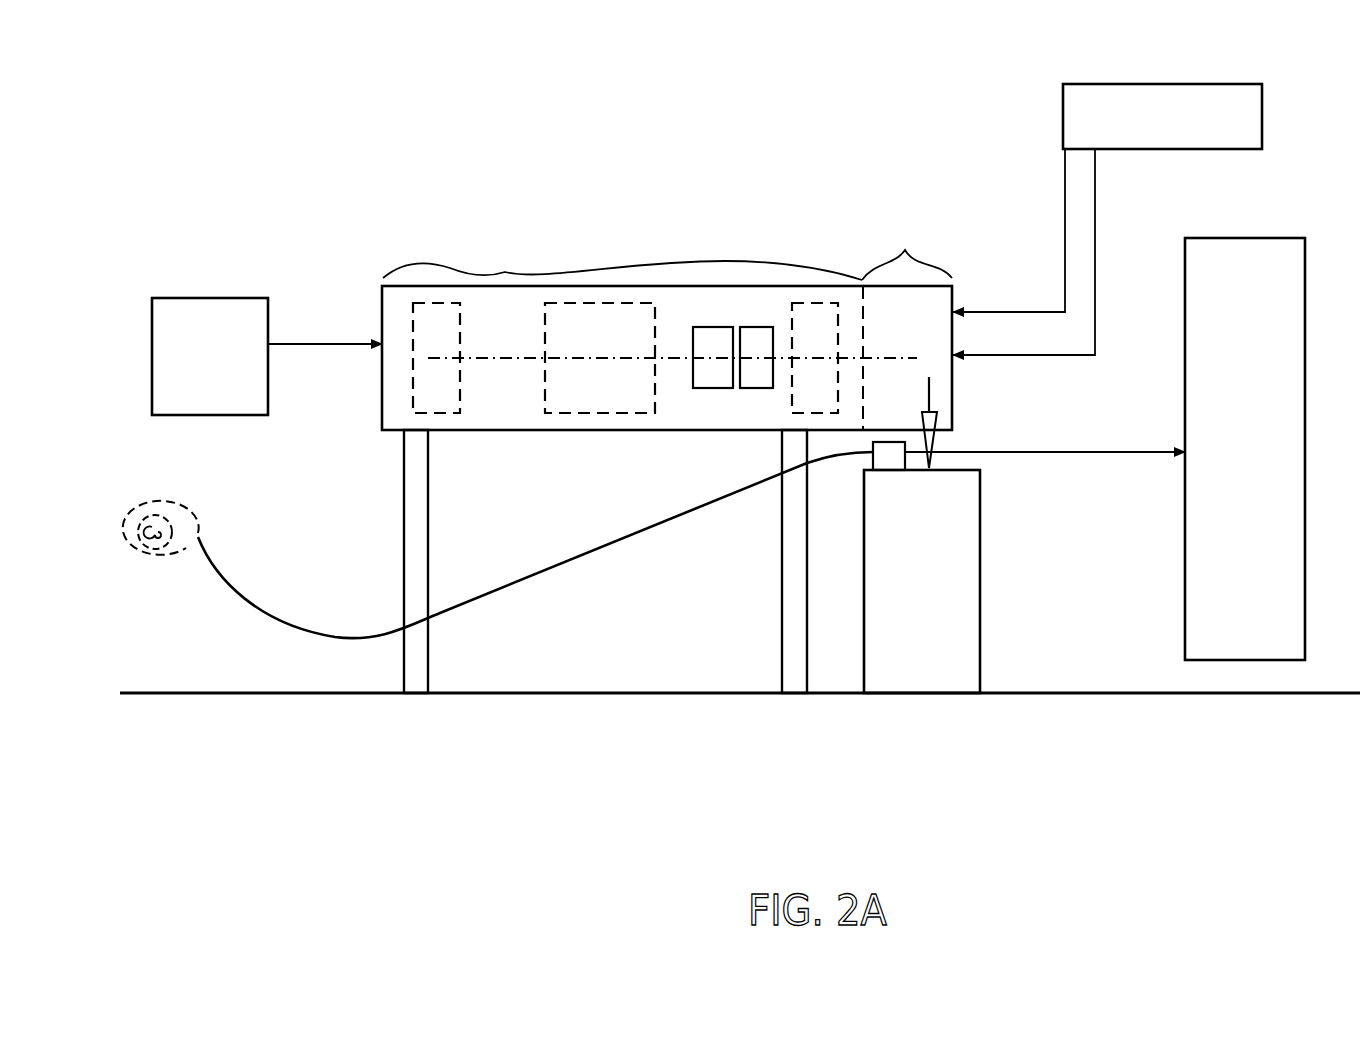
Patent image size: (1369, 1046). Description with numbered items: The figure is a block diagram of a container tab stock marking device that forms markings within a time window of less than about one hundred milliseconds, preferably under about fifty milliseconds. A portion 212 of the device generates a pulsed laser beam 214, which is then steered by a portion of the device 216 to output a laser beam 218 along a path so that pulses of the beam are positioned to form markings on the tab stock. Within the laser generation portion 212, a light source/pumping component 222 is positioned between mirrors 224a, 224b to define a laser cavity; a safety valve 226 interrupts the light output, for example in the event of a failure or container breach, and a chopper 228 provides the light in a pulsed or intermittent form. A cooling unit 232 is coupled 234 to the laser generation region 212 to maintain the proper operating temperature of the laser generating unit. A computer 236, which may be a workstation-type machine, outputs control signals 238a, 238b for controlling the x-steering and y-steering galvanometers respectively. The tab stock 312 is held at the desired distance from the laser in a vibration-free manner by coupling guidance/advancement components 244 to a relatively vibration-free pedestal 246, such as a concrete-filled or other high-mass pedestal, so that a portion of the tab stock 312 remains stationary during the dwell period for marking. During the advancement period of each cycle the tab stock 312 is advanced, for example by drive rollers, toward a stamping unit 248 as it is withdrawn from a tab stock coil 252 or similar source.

The laser generation portion 212 is at (505, 272).
The pulsed laser beam 214 is at (668, 353).
The beam steering portion 216 is at (905, 250).
The output laser beam 218 is at (937, 438).
The light source/pumping component 222 is at (609, 312).
The first mirror 224a is at (434, 312).
The second mirror 224b is at (814, 312).
The safety valve 226 is at (700, 332).
The chopper 228 is at (758, 372).
The cooling unit 232 is at (228, 373).
The coupling 234 is at (325, 301).
The computer 236 is at (1162, 100).
The first control signal 238a is at (1063, 172).
The second control signal 238b is at (1095, 183).
The guidance/advancement components 244 is at (890, 462).
The pedestal 246 is at (928, 597).
The stamping unit 248 is at (1240, 238).
The tab stock coil 252 is at (145, 552).
The tab stock 312 is at (650, 540).